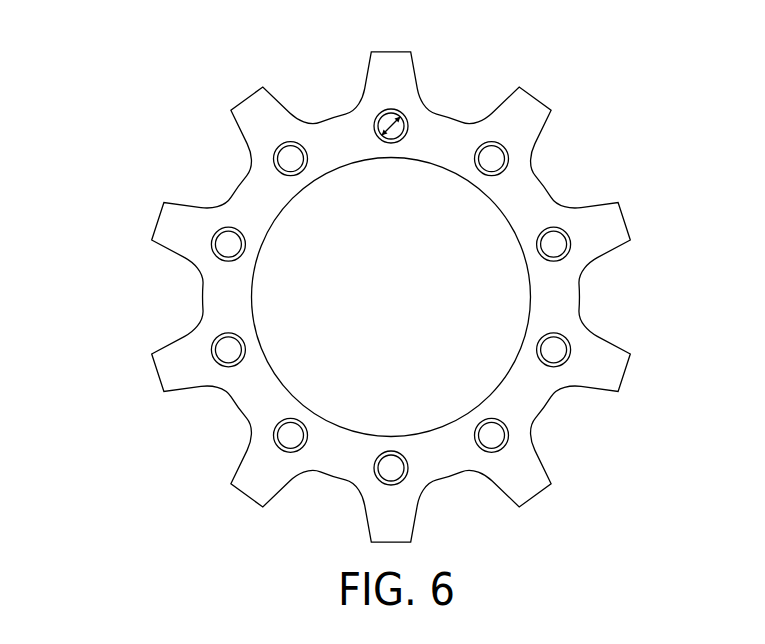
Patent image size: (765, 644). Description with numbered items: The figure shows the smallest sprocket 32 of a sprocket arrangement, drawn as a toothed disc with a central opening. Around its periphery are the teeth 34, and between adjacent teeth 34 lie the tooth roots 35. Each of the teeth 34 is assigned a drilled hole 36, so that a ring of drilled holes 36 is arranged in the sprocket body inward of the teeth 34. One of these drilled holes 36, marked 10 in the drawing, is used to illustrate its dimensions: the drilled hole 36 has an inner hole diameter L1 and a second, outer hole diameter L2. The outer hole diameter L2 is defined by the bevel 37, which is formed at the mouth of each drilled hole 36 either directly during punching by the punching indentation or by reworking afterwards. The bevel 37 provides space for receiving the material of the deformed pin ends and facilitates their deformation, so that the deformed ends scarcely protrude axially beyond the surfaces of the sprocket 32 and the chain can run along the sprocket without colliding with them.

The smallest sprocket 32 is at (157, 132).
The teeth 34 is at (527, 110).
The tooth roots 35 is at (542, 177).
The hole (bore) 10 is at (392, 111).
The hole diameter L1 is at (386, 131).
The outer hole diameter L2 is at (377, 131).
The drilled hole 36 is at (554, 353).
The bevel 37 is at (485, 450).